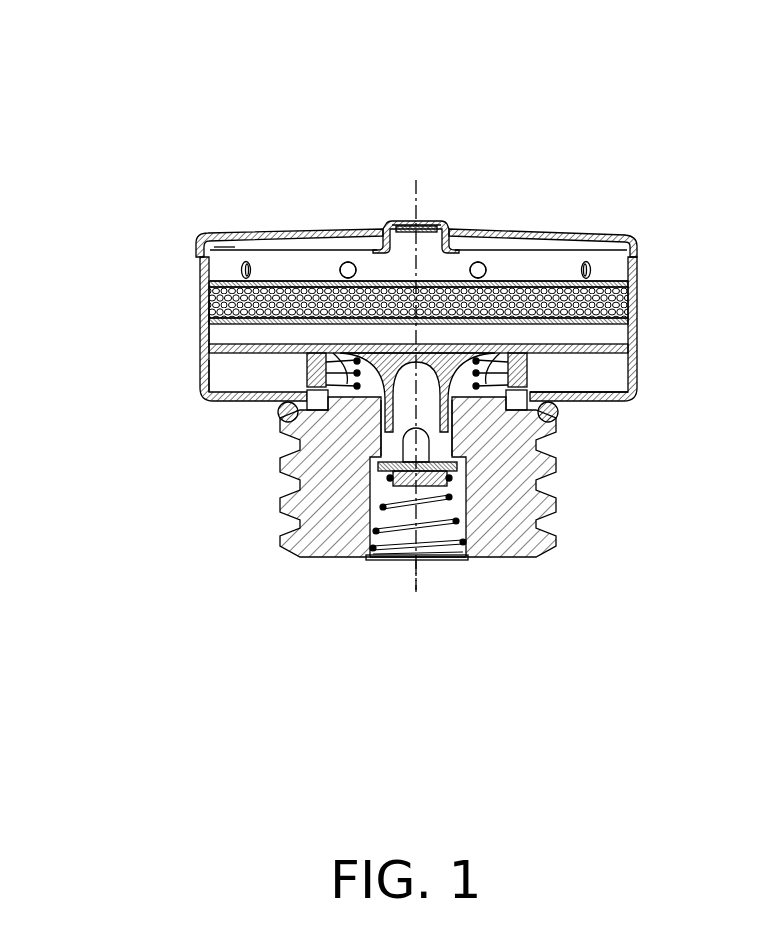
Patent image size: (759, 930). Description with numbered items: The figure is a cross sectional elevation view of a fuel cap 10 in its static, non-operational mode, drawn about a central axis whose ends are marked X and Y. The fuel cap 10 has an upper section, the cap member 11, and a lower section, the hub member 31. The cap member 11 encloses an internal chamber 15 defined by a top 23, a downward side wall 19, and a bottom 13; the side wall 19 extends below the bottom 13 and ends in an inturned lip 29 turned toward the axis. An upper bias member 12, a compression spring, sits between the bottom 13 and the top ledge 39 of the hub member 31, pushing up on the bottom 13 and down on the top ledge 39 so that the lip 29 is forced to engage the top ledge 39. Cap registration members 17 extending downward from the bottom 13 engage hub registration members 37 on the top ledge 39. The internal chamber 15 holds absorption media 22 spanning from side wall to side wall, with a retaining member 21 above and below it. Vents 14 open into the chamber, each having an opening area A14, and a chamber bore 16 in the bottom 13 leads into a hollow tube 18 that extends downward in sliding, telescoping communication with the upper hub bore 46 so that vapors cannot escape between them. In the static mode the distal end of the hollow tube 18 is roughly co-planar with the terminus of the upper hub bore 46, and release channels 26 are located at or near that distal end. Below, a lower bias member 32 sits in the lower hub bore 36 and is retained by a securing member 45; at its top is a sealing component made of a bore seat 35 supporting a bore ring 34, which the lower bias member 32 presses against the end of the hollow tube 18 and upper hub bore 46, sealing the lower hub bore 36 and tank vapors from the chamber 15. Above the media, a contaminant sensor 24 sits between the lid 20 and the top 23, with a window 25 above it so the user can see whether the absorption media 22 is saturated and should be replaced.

The fuel cap 10 is at (178, 100).
The cap member 11 is at (204, 372).
The upper bias member 12 is at (338, 372).
The bottom 13 is at (505, 344).
The vent 14 is at (332, 250).
The vent opening area A14 is at (350, 268).
The internal chamber 15 is at (534, 277).
The chamber bore 16 is at (454, 349).
The cap registration member 17 is at (532, 367).
The hollow tube 18 is at (468, 403).
The side wall 19 is at (204, 322).
The lid 20 is at (190, 238).
The retaining member 21 is at (627, 268).
The absorption media 22 is at (212, 300).
The top 23 is at (277, 263).
The contaminant sensor 24 is at (452, 221).
The window 25 is at (440, 213).
The release channel 26 is at (440, 454).
The inturned lip 29 is at (207, 411).
The hub member 31 is at (560, 533).
The lower bias member 32 is at (363, 518).
The bore ring 34 is at (372, 466).
The bore seat 35 is at (372, 478).
The lower hub bore 36 is at (380, 560).
The hub registration member 37 is at (480, 405).
The top ledge 39 is at (560, 397).
The securing member 45 is at (457, 560).
The upper hub bore 46 is at (385, 422).
The axis X is at (415, 365).
The axis Y is at (414, 601).